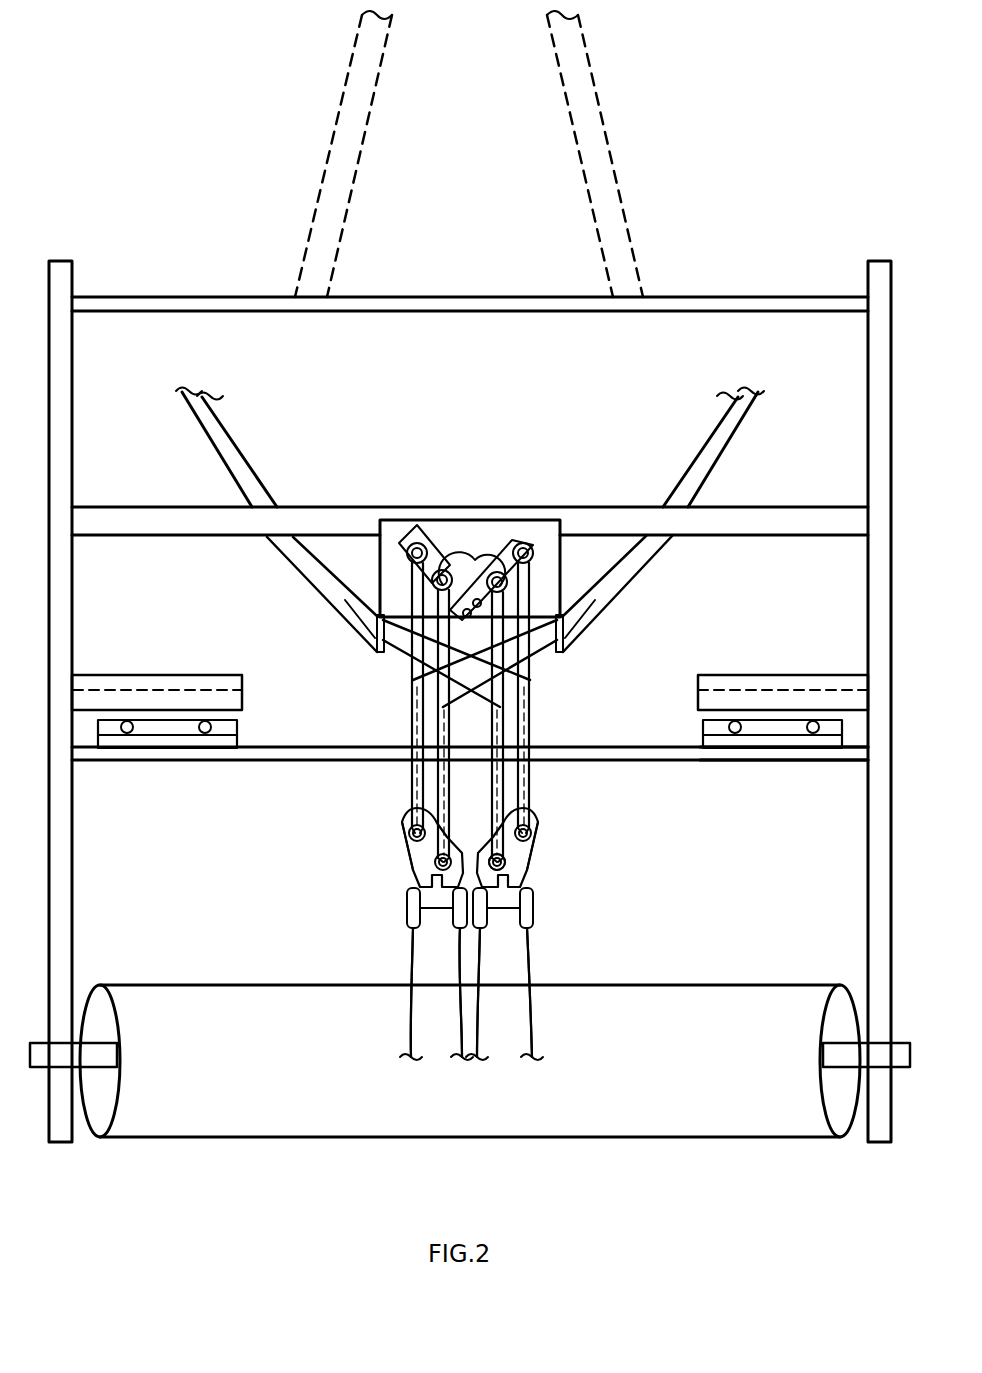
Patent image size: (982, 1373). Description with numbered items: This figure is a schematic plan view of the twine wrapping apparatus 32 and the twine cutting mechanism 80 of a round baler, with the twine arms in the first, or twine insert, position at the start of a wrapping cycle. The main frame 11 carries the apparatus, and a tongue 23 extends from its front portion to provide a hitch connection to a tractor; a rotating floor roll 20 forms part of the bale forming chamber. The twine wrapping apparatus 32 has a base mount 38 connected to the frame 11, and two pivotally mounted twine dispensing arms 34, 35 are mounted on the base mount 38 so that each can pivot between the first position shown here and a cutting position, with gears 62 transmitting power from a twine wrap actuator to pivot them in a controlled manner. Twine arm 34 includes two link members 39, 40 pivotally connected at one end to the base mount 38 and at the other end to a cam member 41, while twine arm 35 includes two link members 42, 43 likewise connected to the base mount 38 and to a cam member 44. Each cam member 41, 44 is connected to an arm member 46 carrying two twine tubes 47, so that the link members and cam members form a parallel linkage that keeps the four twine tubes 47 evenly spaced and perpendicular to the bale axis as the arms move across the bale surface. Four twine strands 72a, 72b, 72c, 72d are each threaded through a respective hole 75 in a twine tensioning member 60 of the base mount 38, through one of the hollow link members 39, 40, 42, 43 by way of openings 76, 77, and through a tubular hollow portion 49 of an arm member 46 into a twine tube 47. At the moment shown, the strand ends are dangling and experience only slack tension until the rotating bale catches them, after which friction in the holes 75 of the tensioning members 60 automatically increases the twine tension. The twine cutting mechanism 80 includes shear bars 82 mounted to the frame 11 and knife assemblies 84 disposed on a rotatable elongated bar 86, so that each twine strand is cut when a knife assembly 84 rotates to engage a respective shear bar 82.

The main frame 11 is at (348, 525).
The floor roll 20 is at (760, 1138).
The tongue 23 is at (348, 163).
The twine wrapping apparatus 32 is at (716, 906).
The twine arm 34 is at (395, 690).
The twine arm 35 is at (542, 690).
The base mount 38 is at (468, 535).
The link member 39 is at (410, 790).
The link member 40 is at (452, 800).
The cam member 41 is at (402, 833).
The link member 42 is at (505, 866).
The link member 43 is at (530, 790).
The cam member 44 is at (537, 833).
The arm member 46 is at (407, 915).
The twine tube 47 is at (405, 938).
The tubular hollow portion 49 is at (410, 903).
The twine tensioning member 60 is at (375, 643).
The gears 62 is at (450, 557).
The twine strand 72a is at (688, 422).
The twine strand 72b is at (740, 422).
The twine strand 72c is at (222, 468).
The twine strand 72d is at (227, 422).
The hole 75 is at (376, 605).
The opening 76 is at (413, 688).
The opening 77 is at (412, 828).
The twine cutting mechanism 80 is at (253, 770).
The shear bar 82 is at (122, 680).
The knife assembly 84 is at (245, 728).
The rotatable elongated bar 86 is at (800, 765).